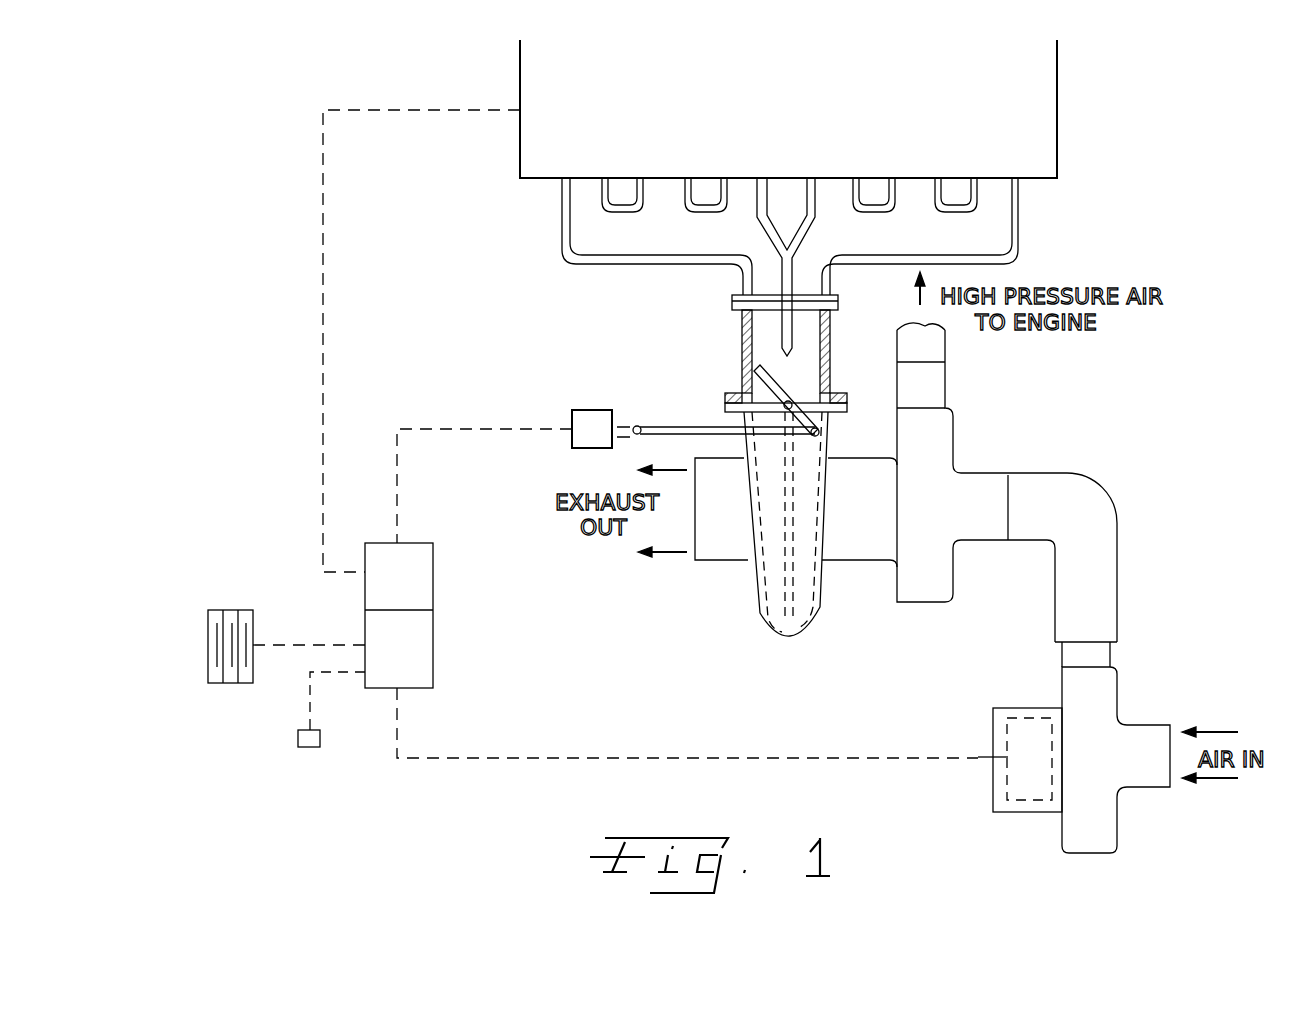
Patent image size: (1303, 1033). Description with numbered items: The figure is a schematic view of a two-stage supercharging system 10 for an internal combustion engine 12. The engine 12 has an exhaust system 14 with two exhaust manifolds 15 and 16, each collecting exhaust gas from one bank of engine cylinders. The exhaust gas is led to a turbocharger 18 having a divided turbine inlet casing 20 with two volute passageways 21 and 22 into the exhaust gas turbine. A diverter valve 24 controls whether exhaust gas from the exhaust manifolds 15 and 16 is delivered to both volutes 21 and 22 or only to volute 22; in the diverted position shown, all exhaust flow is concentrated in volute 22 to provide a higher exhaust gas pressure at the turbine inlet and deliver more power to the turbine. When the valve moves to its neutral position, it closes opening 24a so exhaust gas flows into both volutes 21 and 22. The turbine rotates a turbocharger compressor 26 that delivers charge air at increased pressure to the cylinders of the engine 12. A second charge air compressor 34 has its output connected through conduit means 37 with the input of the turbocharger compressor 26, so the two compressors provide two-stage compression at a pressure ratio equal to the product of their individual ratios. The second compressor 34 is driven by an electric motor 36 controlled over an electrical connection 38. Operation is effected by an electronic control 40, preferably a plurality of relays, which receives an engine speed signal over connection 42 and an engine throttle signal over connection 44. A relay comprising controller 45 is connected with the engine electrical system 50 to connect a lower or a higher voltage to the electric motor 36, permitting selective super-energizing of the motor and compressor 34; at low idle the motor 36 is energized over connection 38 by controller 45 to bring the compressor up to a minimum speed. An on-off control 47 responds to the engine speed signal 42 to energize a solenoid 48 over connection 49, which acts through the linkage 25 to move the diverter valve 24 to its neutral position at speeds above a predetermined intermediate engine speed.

The supercharging system 10 is at (1115, 427).
The internal combustion engine 12 is at (1057, 100).
The exhaust system 14 is at (1030, 208).
The exhaust manifold 15 is at (575, 238).
The exhaust manifold 16 is at (1002, 250).
The turbocharger 18 is at (765, 658).
The divided turbine inlet casing 20 is at (760, 617).
The volute passageway 21 is at (775, 585).
The volute passageway 22 is at (807, 600).
The diverter valve 24 is at (770, 368).
The opening 24a is at (800, 375).
The linkage 25 is at (670, 423).
The turbocharger compressor 26 is at (955, 442).
The second charge air compressor 34 is at (1117, 692).
The electric motor 36 is at (1020, 717).
The conduit means 37 is at (1118, 570).
The electrical connection 38 is at (905, 750).
The electronic control 40 is at (455, 600).
The engine speed signal connection 42 is at (323, 258).
The engine throttle signal connection 44 is at (308, 703).
The controller 45 is at (398, 653).
The on-off control 47 is at (398, 581).
The solenoid 48 is at (592, 410).
The connection 49 is at (445, 428).
The engine electrical system 50 is at (208, 647).